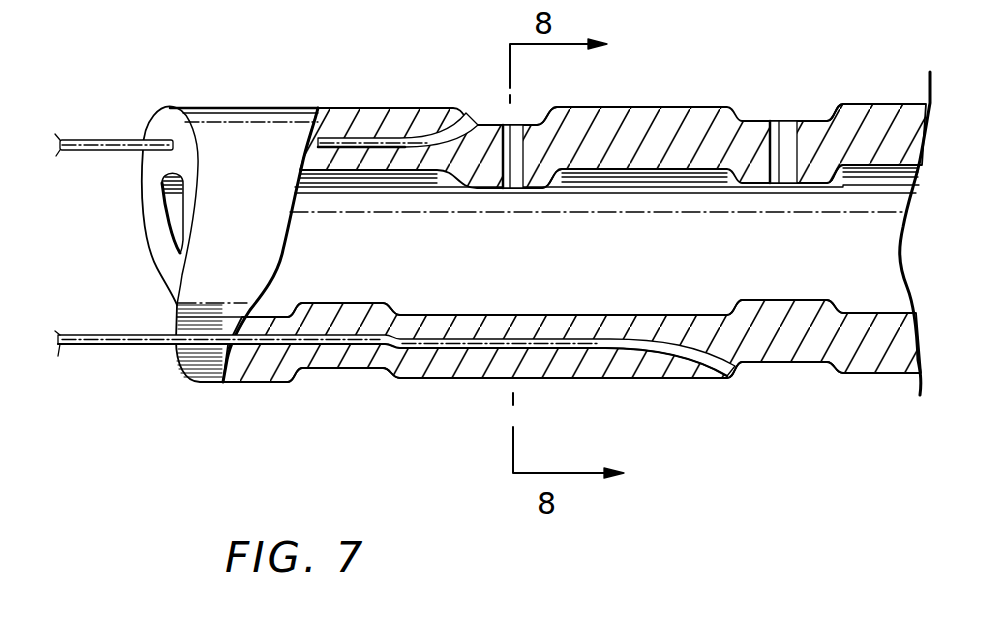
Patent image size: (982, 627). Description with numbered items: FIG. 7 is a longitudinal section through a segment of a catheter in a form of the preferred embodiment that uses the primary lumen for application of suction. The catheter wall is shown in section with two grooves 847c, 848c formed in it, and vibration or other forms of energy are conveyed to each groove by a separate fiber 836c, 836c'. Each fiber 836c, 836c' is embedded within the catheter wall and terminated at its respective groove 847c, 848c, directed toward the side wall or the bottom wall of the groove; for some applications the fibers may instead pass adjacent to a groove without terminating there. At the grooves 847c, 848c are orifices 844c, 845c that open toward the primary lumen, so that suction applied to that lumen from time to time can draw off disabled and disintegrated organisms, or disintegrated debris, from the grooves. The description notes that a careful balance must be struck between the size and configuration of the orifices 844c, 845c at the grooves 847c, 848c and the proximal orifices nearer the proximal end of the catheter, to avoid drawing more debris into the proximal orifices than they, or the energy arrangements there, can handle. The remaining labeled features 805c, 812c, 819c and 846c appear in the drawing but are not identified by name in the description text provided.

The catheter tube body 805c is at (928, 87).
The crimp sleeve 812c is at (288, 242).
The lumen / aperture 819c is at (175, 218).
The fiber 836c is at (396, 346).
The fiber 836c' is at (266, 104).
The orifice 844c is at (505, 190).
The orifice 845c is at (788, 120).
The tube portion within sleeve 846c is at (273, 143).
The groove 847c is at (548, 107).
The groove 848c is at (822, 106).